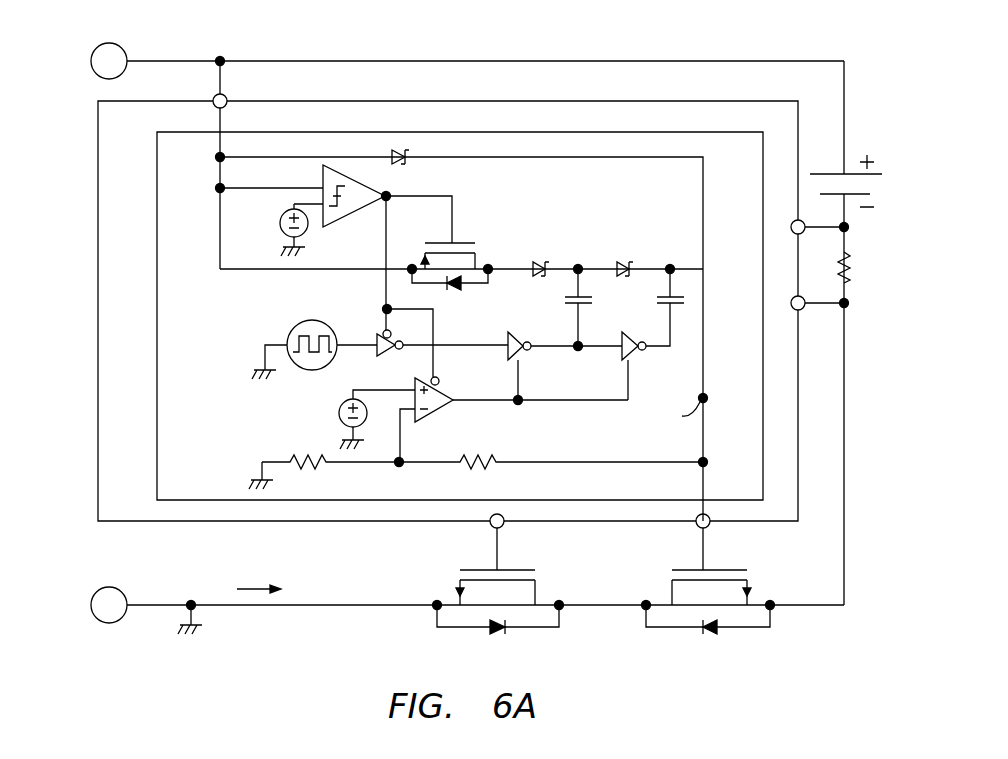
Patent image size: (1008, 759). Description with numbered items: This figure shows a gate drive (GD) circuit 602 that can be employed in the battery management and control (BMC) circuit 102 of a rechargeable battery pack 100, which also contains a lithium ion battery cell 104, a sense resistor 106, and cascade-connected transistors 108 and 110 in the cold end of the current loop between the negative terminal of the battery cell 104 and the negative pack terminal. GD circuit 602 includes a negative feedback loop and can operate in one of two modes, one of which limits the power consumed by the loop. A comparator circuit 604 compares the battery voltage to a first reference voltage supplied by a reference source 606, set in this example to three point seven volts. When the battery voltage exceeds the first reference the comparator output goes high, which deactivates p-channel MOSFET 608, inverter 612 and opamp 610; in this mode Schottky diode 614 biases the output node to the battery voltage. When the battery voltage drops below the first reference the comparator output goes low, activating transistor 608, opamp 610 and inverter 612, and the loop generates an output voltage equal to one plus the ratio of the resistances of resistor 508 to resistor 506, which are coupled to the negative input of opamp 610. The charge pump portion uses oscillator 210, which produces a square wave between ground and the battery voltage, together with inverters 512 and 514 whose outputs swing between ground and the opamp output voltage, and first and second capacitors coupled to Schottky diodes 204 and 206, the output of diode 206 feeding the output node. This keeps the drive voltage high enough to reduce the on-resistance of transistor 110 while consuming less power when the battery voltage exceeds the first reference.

The rechargeable battery pack 100 is at (858, 24).
The battery management and control (BMC) circuit 102 is at (785, 128).
The lithium ion battery cell 104 is at (835, 173).
The sense resistor 106 is at (838, 268).
The transistor 108 is at (510, 568).
The transistor 110 is at (720, 568).
The Schottky diode 204 is at (541, 262).
The Schottky diode 206 is at (625, 262).
The oscillator 210 is at (290, 330).
The resistor 506 is at (287, 458).
The resistor 508 is at (493, 460).
The inverter 512 is at (529, 351).
The inverter 514 is at (644, 351).
The GD circuit 602 is at (745, 161).
The comparator circuit 604 is at (333, 222).
The reference voltage source VR1 606 is at (306, 233).
The p-channel metal oxide field effect transistor 608 is at (468, 243).
The opamp 610 is at (438, 379).
The inverter 612 is at (399, 350).
The Schottky diode 614 is at (390, 157).